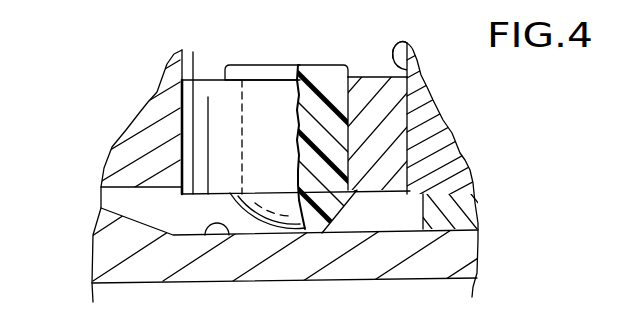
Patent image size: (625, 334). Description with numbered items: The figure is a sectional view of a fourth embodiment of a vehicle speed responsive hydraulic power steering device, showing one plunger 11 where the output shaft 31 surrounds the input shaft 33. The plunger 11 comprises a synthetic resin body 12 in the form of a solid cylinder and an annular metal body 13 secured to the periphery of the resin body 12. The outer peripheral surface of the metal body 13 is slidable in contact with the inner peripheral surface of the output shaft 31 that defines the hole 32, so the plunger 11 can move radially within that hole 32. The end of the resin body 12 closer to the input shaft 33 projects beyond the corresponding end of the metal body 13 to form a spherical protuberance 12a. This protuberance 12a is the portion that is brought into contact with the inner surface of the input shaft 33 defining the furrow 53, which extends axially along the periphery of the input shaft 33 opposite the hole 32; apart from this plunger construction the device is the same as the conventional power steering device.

The plunger 11 is at (187, 100).
The synthetic resin body 12 is at (320, 80).
The spherical protuberance 12a is at (312, 218).
The annular metal body 13 is at (390, 136).
The output shaft 31 is at (448, 177).
The hole 32 is at (393, 42).
The input shaft 33 is at (453, 257).
The furrow 53 is at (222, 226).